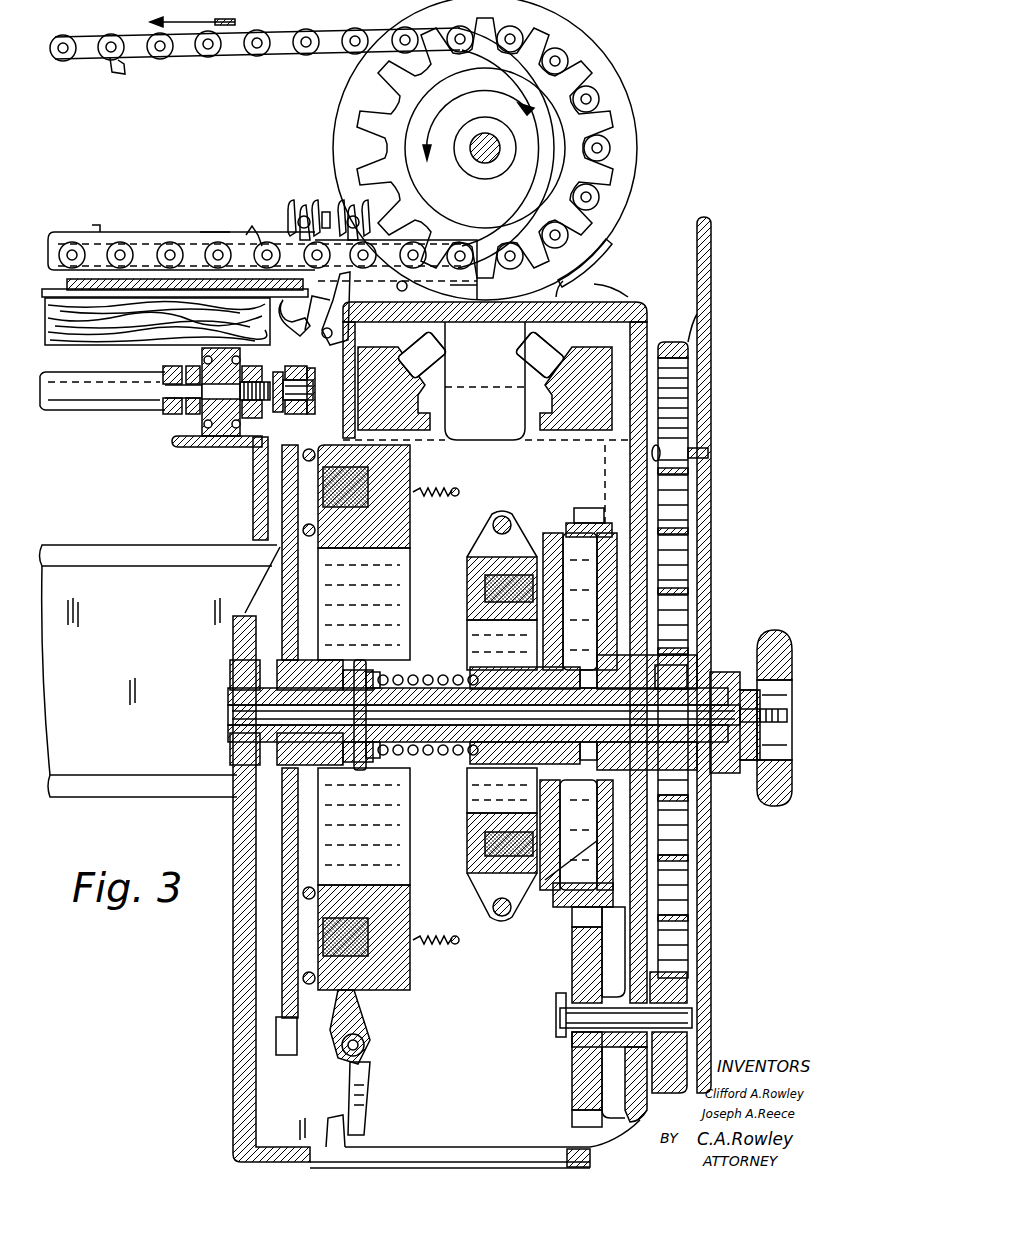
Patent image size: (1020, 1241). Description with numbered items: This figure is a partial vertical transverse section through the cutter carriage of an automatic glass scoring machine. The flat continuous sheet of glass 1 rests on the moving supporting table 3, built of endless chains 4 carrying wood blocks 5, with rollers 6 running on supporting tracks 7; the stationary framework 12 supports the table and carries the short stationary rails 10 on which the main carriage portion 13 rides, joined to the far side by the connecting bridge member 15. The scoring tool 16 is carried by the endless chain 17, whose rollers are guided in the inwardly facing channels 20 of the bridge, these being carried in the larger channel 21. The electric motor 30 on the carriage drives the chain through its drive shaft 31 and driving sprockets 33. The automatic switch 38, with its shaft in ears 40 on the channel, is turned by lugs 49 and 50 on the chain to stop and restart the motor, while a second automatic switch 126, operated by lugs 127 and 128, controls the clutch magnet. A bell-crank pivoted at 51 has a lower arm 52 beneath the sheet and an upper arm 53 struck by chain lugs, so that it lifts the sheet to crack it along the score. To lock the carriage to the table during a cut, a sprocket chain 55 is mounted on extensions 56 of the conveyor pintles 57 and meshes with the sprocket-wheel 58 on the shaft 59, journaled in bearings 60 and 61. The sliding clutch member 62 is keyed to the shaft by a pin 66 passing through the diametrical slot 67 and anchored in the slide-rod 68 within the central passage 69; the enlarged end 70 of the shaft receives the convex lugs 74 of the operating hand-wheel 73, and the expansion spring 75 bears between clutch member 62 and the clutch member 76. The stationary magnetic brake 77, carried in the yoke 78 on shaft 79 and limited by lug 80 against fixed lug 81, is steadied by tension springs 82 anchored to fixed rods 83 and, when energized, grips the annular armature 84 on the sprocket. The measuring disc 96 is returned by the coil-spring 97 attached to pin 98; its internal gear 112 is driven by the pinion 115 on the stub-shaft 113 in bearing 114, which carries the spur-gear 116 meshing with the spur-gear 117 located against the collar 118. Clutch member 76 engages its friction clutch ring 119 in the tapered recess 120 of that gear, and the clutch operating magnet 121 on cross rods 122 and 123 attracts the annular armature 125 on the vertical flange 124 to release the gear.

The sheet of glass 1 is at (122, 288).
The supporting table 3 is at (105, 330).
The endless chains 4 is at (160, 392).
The wood blocks 5 is at (240, 335).
The rollers 6 is at (212, 447).
The supporting tracks 7 is at (253, 480).
The stationary rails 10 is at (372, 395).
The stationary framework 12 is at (92, 770).
The main carriage portion 13 is at (240, 958).
The connecting bridge member 15 is at (208, 232).
The scoring tool 16 is at (376, 282).
The endless chain 17 is at (285, 42).
The inwardly facing channels 20 is at (138, 240).
The channel 21 is at (478, 285).
The electric motor 30 is at (637, 130).
The drive shaft 31 is at (500, 145).
The driving sprockets 33 is at (405, 123).
The automatic switch 38 is at (352, 215).
The ears 40 is at (366, 214).
The lug 49 is at (326, 228).
The lug 50 is at (250, 225).
The pivot 51 is at (345, 330).
The lower arm 52 is at (290, 322).
The upper arm 53 is at (360, 322).
The sprocket chain 55 is at (290, 368).
The extensions 56 is at (330, 380).
The pintles 57 is at (190, 400).
The sprocket-wheel 58 is at (290, 822).
The shaft 59 is at (232, 692).
The bearing 60 is at (672, 672).
The bearing 61 is at (238, 665).
The sliding clutch member 62 is at (362, 665).
The pin 66 is at (378, 676).
The diametrical slot 67 is at (412, 672).
The slide-rod 68 is at (437, 780).
The central passage 69 is at (232, 716).
The enlarged end 70 is at (728, 660).
The operating hand-wheel 73 is at (782, 630).
The convex lugs 74 is at (748, 765).
The expansion spring 75 is at (458, 760).
The clutch member 76 is at (475, 672).
The magnetic brake 77 is at (405, 985).
The yoke 78 is at (370, 1012).
The shaft 79 is at (365, 1045).
The lug 80 is at (366, 1100).
The fixed lug 81 is at (330, 1118).
The tension springs 82 is at (434, 490).
The fixed rods 83 is at (475, 480).
The annular armature 84 is at (304, 922).
The measuring disc 96 is at (712, 355).
The coil-spring 97 is at (690, 520).
The pin 98 is at (708, 452).
The internal gear 112 is at (668, 342).
The stub-shaft 113 is at (692, 1018).
The bearing 114 is at (578, 972).
The pinion 115 is at (687, 990).
The spur-gear 116 is at (580, 1070).
The spur-gear 117 is at (600, 510).
The collar 118 is at (588, 812).
The friction clutch ring 119 is at (552, 540).
The tapered recess 120 is at (578, 522).
The clutch operating magnet 121 is at (490, 545).
The cross rod 122 is at (492, 523).
The cross rod 123 is at (492, 908).
The vertical flange 124 is at (572, 912).
The annular armature 125 is at (545, 882).
The automatic switch 126 is at (296, 212).
The lug 127 is at (99, 224).
The lug 128 is at (122, 72).